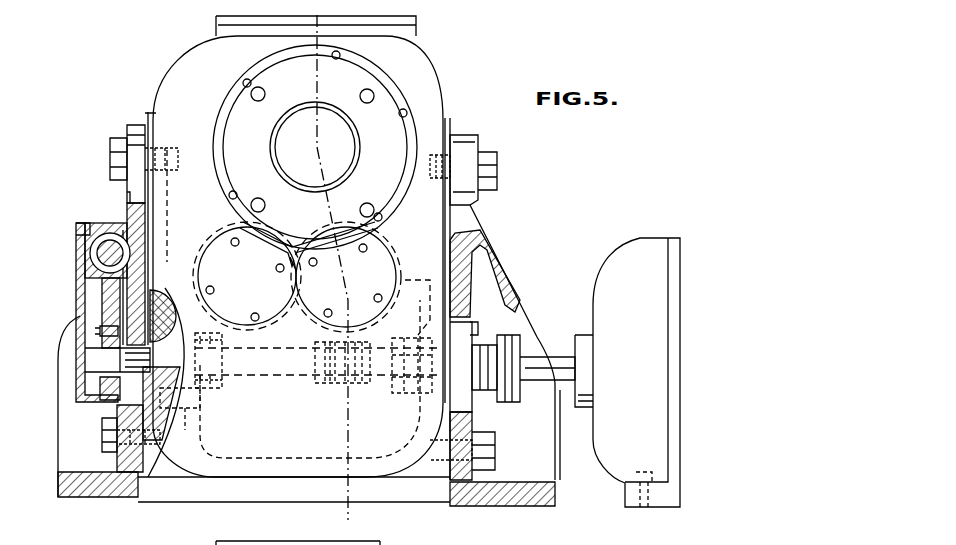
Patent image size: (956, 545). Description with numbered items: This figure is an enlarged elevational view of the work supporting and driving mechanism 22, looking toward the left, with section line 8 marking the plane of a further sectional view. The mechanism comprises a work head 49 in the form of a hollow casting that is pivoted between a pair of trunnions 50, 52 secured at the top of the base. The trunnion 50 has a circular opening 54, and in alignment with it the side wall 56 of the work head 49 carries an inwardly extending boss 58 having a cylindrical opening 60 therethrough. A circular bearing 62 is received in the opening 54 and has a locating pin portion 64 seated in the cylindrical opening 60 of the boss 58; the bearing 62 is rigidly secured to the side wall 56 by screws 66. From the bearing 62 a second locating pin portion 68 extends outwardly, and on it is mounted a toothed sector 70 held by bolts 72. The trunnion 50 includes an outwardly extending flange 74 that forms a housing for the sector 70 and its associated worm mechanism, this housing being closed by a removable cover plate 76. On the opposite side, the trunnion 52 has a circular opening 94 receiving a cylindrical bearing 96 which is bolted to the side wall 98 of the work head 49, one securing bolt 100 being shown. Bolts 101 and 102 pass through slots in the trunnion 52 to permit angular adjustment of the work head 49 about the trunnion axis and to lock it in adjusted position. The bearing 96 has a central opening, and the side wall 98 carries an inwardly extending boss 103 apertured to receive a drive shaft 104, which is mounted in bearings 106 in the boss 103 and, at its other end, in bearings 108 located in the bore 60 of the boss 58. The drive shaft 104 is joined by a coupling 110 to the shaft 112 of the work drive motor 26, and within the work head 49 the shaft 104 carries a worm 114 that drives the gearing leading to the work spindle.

The section line 8— 8 is at (335, 13).
The work supporting and driving mechanism 22 is at (149, 88).
The motor 26 is at (636, 242).
The work head 49 is at (446, 106).
The trunnion 50 is at (58, 373).
The trunnion 52 is at (500, 272).
The circular opening 54 is at (168, 298).
The side wall 56 is at (160, 432).
The boss 58 is at (247, 334).
The cylindrical opening 60 is at (190, 419).
The circular bearing 62 is at (165, 314).
The locating pin portion 64 is at (172, 360).
The screws 66 is at (116, 392).
The locating pin portion 68 is at (112, 360).
The toothed sector 70 is at (102, 300).
The bolts 72 is at (100, 331).
The flange 74 is at (98, 228).
The cover plate 76 is at (76, 260).
The circular opening 94 is at (472, 326).
The cylindrical bearing 96 is at (474, 408).
The side wall 98 is at (430, 300).
The securing bolt 100 is at (472, 345).
The bolt 101 is at (498, 178).
The bolt 102 is at (496, 456).
The boss 103 is at (414, 413).
The drive shaft 104 is at (298, 381).
The bearings 106 is at (409, 396).
The bearings 108 is at (238, 382).
The coupling 110 is at (522, 340).
The shaft 112 is at (556, 355).
The worm 114 is at (327, 398).